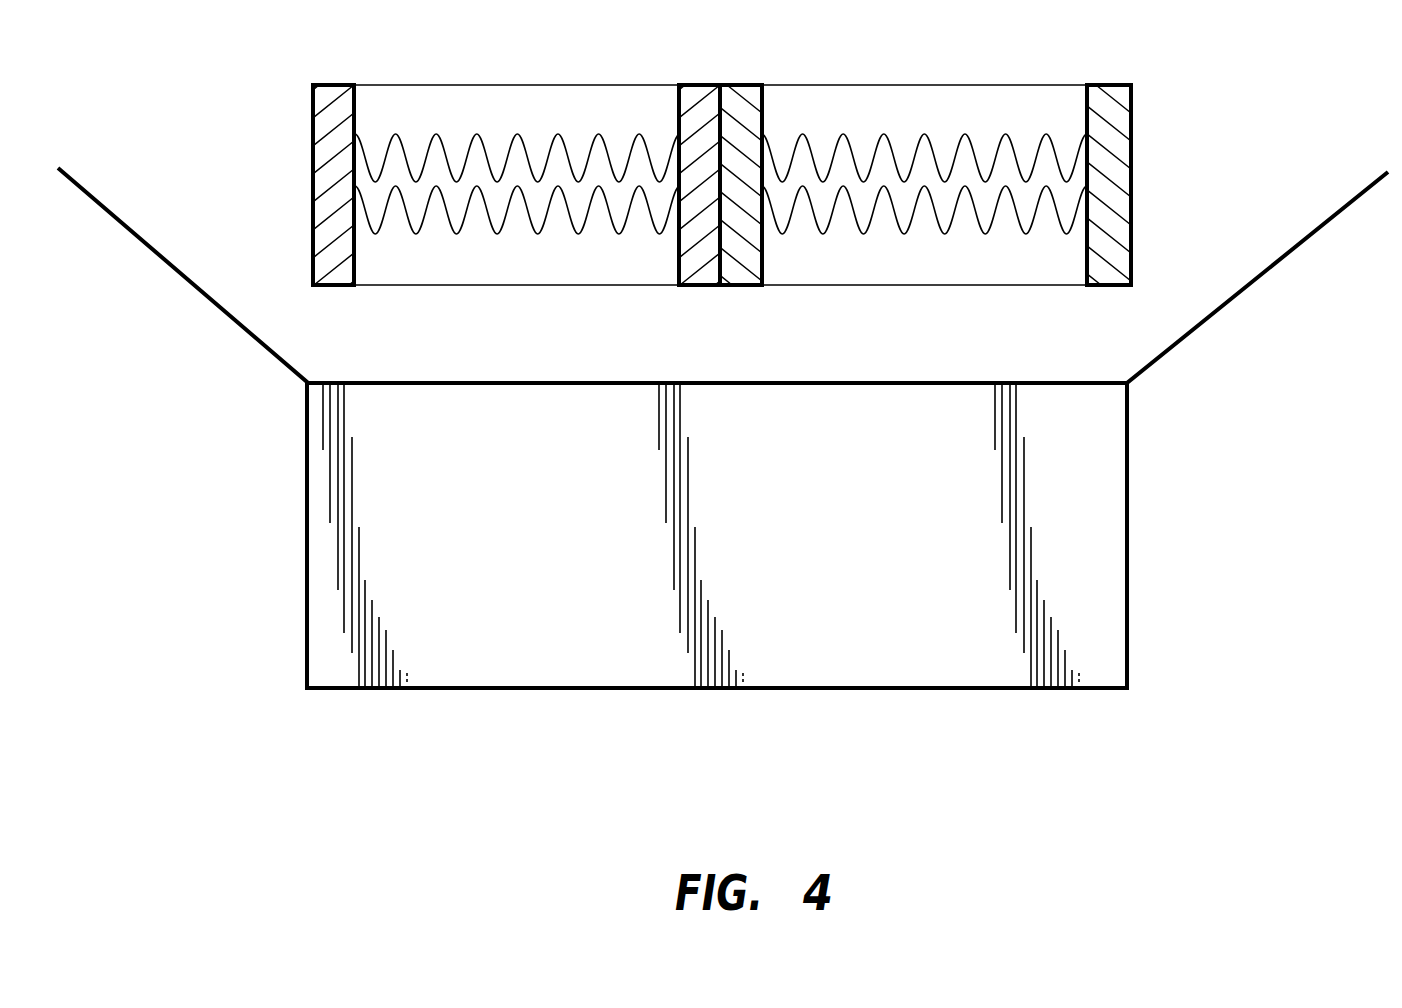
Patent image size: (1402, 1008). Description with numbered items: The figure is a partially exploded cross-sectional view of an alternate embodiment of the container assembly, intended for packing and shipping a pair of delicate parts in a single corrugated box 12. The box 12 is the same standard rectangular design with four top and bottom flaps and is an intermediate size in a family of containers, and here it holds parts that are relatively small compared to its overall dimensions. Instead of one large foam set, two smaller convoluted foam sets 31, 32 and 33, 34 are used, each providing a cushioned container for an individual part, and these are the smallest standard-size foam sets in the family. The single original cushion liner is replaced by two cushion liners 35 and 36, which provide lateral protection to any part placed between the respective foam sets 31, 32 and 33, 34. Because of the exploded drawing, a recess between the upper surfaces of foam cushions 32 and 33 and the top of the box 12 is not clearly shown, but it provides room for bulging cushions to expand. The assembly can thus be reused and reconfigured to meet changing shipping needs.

The corrugated box 12 is at (305, 636).
The convoluted foam set 31 is at (555, 286).
The foam cushion 32 is at (553, 85).
The foam cushion 33 is at (967, 85).
The convoluted foam set 34 is at (843, 286).
The cushion liner 35 is at (335, 85).
The cushion liner 36 is at (748, 85).